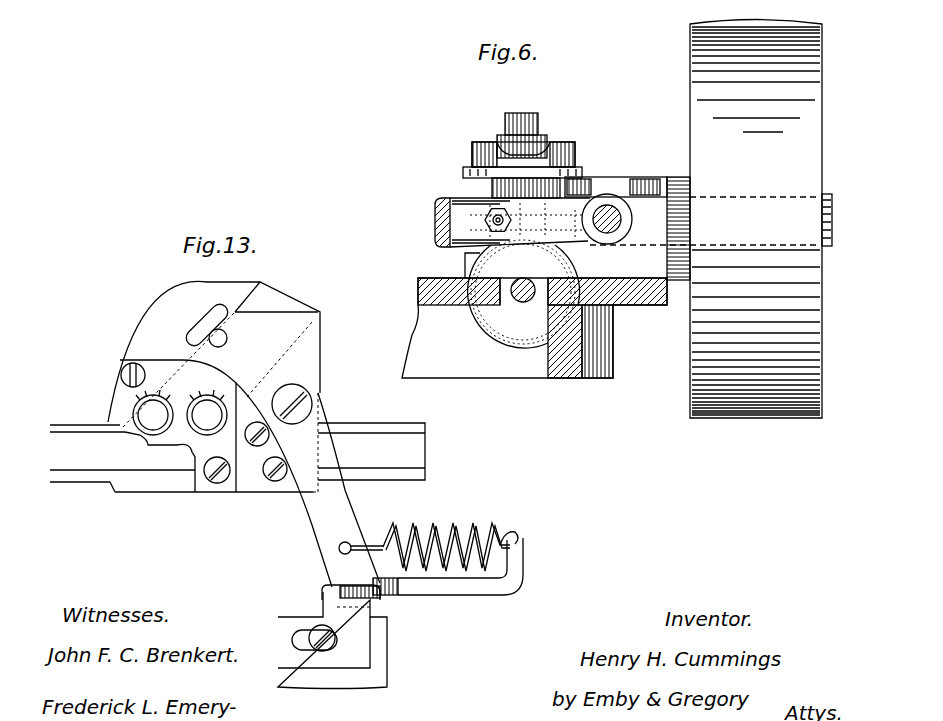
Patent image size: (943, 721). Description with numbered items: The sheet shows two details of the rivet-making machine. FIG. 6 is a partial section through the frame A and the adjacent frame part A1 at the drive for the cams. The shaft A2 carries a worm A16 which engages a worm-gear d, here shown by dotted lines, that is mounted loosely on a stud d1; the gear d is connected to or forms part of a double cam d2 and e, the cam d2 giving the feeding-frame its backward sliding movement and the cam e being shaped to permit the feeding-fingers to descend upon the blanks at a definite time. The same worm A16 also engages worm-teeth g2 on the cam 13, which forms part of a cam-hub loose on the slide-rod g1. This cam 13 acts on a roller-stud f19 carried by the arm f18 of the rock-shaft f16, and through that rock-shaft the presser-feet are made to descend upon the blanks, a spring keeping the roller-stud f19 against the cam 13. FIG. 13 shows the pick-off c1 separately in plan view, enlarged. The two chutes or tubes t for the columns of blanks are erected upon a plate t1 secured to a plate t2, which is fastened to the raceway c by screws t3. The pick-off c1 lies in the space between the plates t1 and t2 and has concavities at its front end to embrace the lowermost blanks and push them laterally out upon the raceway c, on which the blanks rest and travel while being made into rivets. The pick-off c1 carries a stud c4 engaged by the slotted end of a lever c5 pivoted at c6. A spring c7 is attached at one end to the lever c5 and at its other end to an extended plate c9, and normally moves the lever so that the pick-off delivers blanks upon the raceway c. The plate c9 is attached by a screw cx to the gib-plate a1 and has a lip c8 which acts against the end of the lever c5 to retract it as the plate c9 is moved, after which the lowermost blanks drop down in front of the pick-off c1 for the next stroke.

In FIG. 6, the frame A is at (418, 285).
In FIG. 6, the frame part A1 is at (566, 203).
In FIG. 6, the shaft A2 is at (830, 198).
In FIG. 6, the worm A16 is at (534, 196).
In FIG. 6, the worm-gear d is at (520, 222).
In FIG. 6, the stud d1 is at (540, 119).
In FIG. 6, the cam d2 is at (463, 171).
In FIG. 6, the cam e is at (477, 143).
In FIG. 6, the rock-shaft f16 is at (614, 212).
In FIG. 6, the arm f18 is at (598, 203).
In FIG. 6, the roller-stud f19 is at (440, 222).
In FIG. 6, the slide-rod g1 is at (524, 294).
In FIG. 6, the worm-teeth g2 is at (557, 262).
In FIG. 6, the cam 13 is at (472, 263).
In FIG. 13, the plate t1 is at (116, 391).
In FIG. 13, the chutes or tubes t is at (181, 432).
In FIG. 13, the plate t2 is at (318, 362).
In FIG. 13, the screws t3 is at (258, 446).
In FIG. 13, the raceway c is at (237, 457).
In FIG. 13, the pick-off c1 is at (298, 313).
In FIG. 13, the stud c4 is at (208, 333).
In FIG. 13, the lever c5 is at (328, 417).
In FIG. 13, the pivot c6 is at (306, 398).
In FIG. 13, the spring c7 is at (435, 524).
In FIG. 13, the lip c8 is at (384, 579).
In FIG. 13, the plate c9 is at (460, 576).
In FIG. 13, the screw cx is at (324, 638).
In FIG. 13, the gib-plate a1 is at (386, 650).